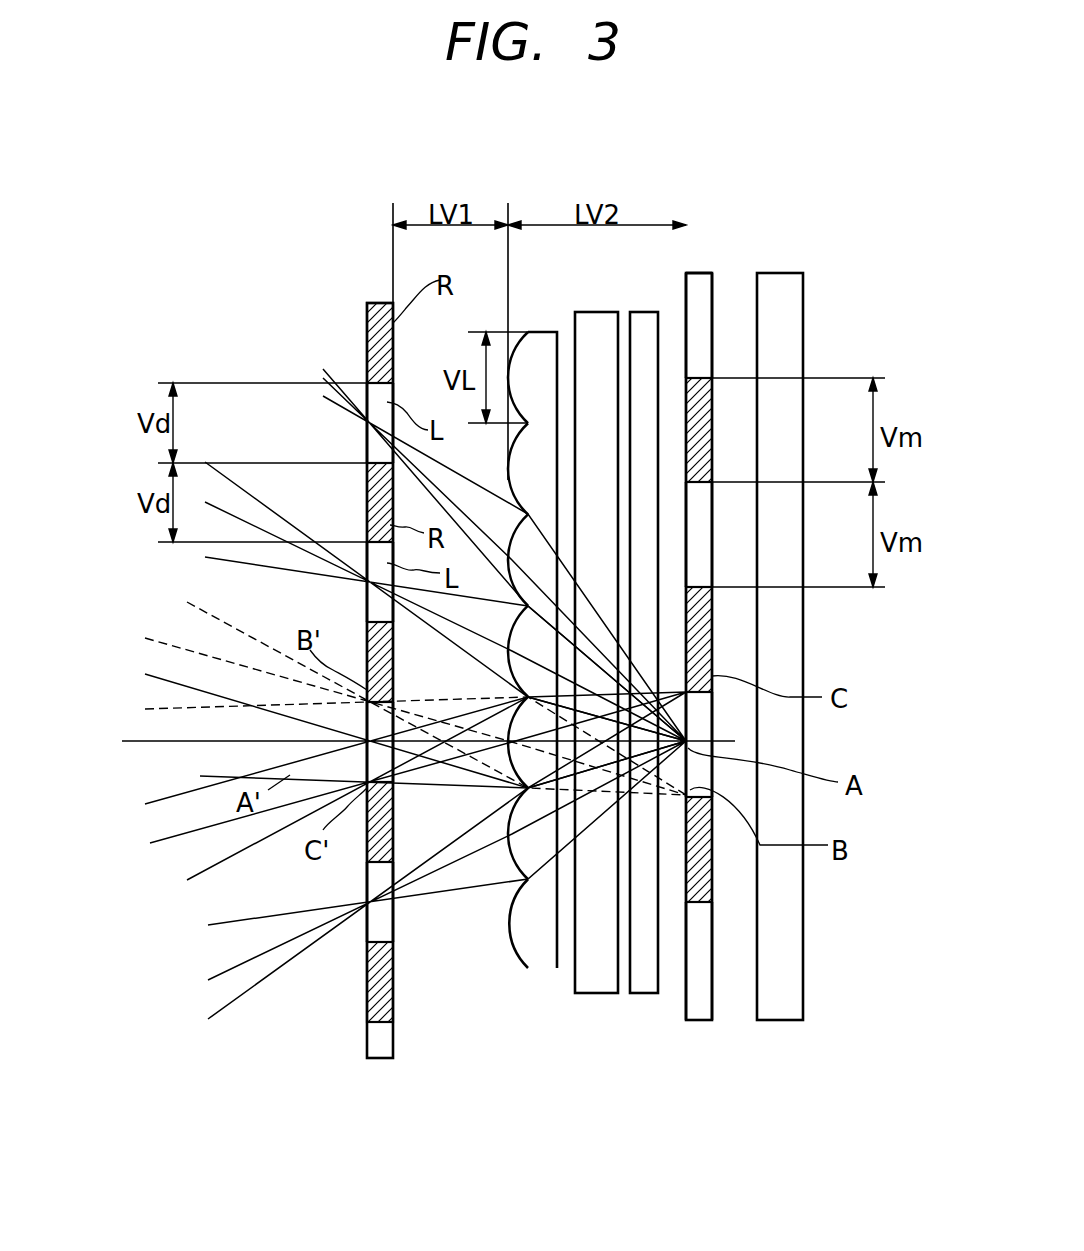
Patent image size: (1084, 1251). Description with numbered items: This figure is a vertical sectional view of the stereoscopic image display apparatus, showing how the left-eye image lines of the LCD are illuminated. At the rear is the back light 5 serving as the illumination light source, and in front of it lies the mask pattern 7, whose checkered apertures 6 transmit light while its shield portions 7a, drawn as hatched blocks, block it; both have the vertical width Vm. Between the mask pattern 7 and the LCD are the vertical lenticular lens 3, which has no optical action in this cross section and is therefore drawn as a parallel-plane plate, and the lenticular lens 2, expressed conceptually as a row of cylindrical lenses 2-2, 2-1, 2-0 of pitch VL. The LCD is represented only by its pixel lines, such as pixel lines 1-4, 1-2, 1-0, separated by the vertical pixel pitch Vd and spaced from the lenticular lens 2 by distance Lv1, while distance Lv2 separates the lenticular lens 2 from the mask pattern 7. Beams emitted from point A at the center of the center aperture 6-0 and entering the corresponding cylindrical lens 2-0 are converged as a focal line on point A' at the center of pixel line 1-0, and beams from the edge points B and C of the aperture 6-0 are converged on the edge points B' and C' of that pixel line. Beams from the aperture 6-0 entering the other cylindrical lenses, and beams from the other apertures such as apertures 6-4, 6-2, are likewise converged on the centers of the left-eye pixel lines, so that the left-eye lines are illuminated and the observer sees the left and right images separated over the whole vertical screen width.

The pixel line 1-4 is at (367, 445).
The pixel line 1-2 is at (367, 593).
The pixel line 1-0 is at (367, 715).
The lenticular lens 2 is at (537, 337).
The cylindrical lens 2-2 is at (520, 537).
The cylindrical lens 2-1 is at (508, 660).
The cylindrical lens 2-0 is at (517, 760).
The vertical lenticular lens 3 is at (602, 993).
The back light 5 is at (783, 1020).
The apertures 6 is at (794, 411).
The aperture 6-4 is at (712, 300).
The aperture 6-2 is at (712, 557).
The center aperture 6-0 is at (705, 717).
The mask pattern 7 is at (704, 263).
The shield portions 7a is at (705, 408).